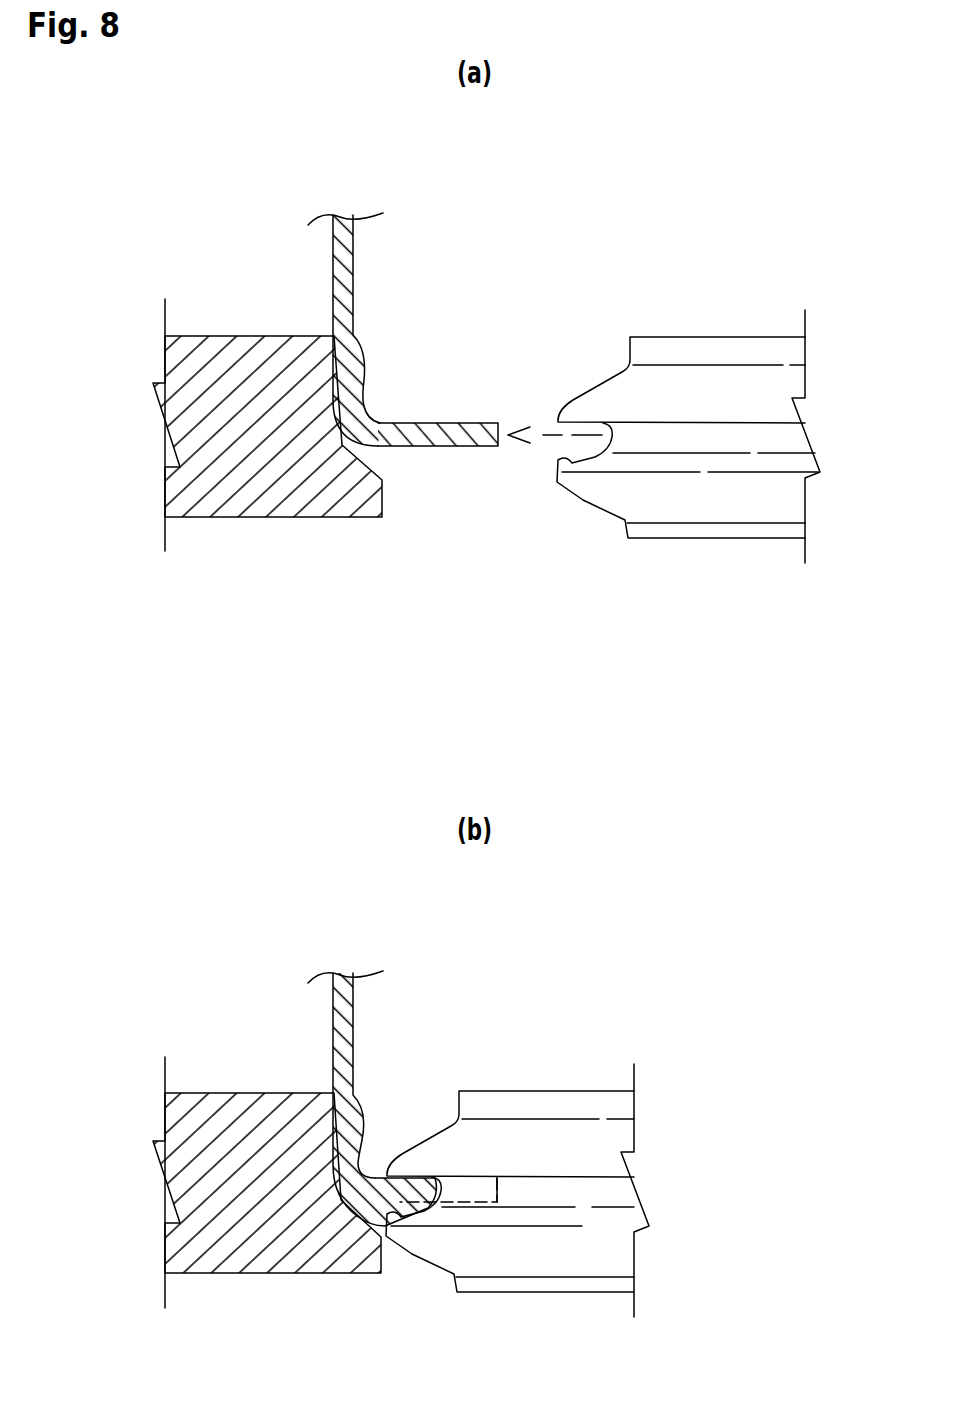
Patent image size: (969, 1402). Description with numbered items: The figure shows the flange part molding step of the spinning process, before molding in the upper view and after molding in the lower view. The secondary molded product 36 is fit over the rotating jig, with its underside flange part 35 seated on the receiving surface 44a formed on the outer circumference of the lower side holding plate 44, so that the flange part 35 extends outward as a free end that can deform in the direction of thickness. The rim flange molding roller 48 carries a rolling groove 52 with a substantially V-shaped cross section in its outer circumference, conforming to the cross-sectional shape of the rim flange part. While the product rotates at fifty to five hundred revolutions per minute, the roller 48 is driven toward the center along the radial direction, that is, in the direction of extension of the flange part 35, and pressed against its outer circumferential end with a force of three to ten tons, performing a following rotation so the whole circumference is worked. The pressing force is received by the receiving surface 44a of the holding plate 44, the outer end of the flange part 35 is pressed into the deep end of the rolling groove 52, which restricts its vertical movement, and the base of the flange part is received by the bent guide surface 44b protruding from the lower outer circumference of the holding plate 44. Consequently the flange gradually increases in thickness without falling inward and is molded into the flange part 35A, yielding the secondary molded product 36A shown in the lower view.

The flange part 35 is at (468, 447).
The flange part 35A is at (361, 1218).
The secondary molded product 36 is at (371, 272).
The secondary molded product 36A is at (371, 1027).
The lower side holding plate 44 is at (256, 509).
The receiving surface 44a is at (337, 382).
The bent guide surface 44b is at (374, 474).
The rim flange molding roller 48 is at (660, 548).
The rolling groove 52 is at (549, 468).